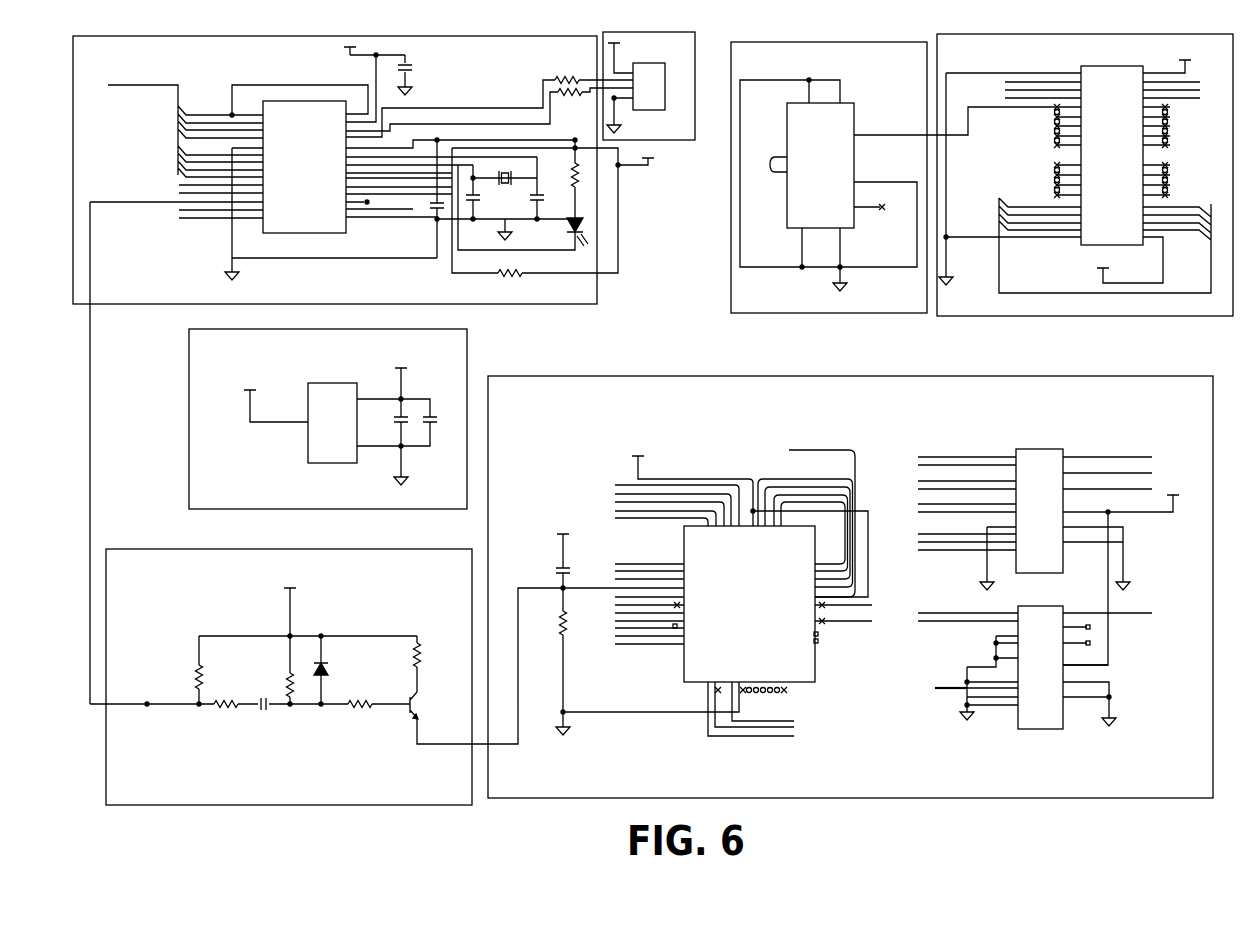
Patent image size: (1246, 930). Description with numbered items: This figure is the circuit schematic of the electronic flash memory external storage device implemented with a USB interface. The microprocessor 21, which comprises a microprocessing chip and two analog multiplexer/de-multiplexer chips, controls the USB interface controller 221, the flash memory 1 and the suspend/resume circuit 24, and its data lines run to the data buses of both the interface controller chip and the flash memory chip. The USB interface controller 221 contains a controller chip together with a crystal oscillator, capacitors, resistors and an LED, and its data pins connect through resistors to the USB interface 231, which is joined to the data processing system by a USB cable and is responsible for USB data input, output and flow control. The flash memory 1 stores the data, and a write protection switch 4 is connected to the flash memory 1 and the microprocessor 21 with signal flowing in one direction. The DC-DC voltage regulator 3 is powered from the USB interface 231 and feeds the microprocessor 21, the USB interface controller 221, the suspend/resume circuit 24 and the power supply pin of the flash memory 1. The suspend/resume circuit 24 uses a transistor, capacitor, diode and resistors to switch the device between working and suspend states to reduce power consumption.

The USB interface controller 221 is at (363, 370).
The USB interface 231 is at (649, 86).
The write protection switch 4 is at (830, 177).
The flash memory 1 is at (1081, 175).
The DC-DC voltage regulator 3 is at (328, 419).
The suspend/resume circuit 24 is at (289, 677).
The microprocessor 21 is at (850, 587).